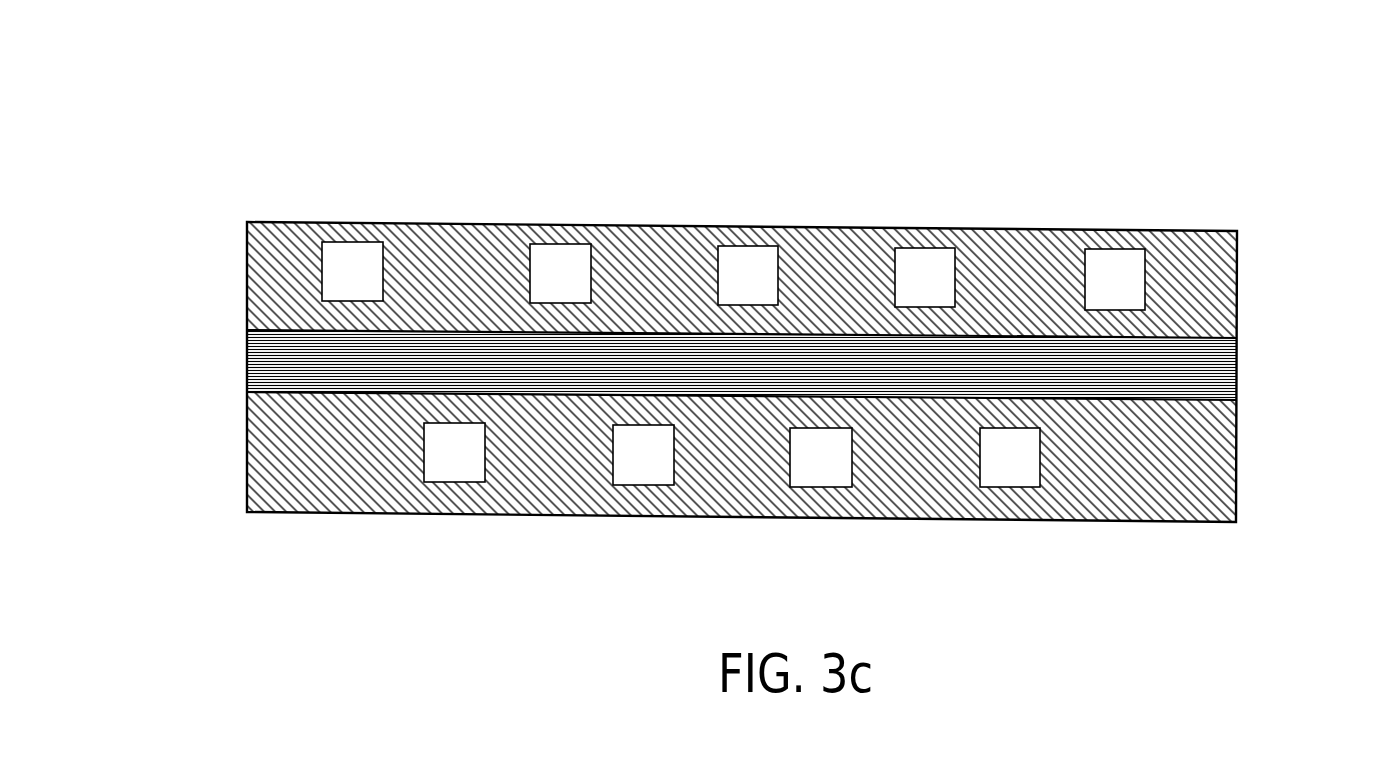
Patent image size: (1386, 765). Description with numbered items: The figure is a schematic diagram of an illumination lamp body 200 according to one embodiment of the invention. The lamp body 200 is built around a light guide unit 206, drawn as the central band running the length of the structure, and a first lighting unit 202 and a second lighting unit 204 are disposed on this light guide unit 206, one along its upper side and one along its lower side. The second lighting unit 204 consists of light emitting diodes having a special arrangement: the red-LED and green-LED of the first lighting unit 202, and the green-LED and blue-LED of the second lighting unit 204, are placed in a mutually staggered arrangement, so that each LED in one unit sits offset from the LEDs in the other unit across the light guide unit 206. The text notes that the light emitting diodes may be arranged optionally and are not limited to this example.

The lamp body 200 is at (764, 315).
The first lighting unit 202 is at (1185, 280).
The second lighting unit 204 is at (457, 467).
The light guide unit 206 is at (293, 365).